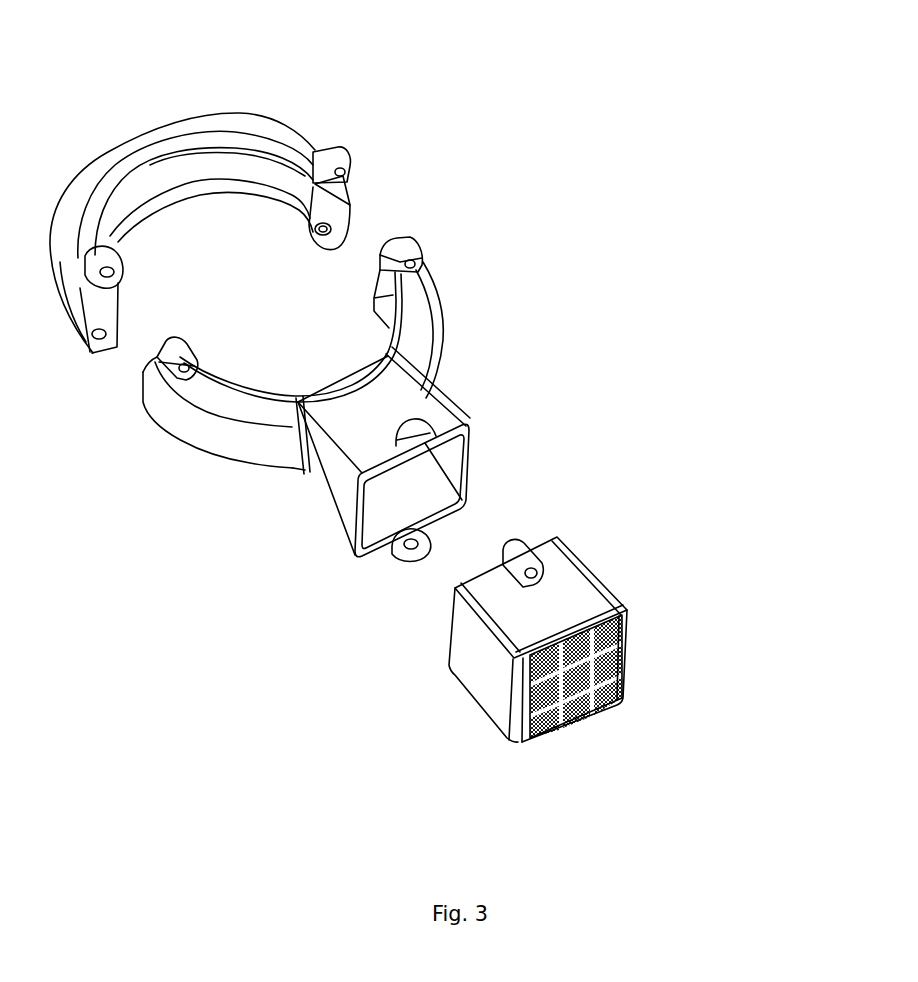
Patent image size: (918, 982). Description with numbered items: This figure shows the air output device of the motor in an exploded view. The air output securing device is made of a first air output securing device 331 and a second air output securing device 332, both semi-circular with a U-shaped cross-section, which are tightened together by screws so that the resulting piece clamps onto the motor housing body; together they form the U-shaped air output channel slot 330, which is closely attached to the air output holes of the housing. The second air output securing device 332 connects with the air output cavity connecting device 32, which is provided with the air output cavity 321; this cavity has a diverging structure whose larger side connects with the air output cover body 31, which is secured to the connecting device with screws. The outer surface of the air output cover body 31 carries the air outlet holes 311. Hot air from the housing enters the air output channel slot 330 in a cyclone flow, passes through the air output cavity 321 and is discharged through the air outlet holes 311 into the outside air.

The air output cover body 31 is at (578, 630).
The air outlet holes 311 is at (533, 720).
The air output cavity connecting device 32 is at (442, 476).
The air output cavity 321 is at (388, 485).
The air output channel slot 330 is at (305, 267).
The first air output securing device 331 is at (292, 146).
The second air output securing device 332 is at (418, 295).